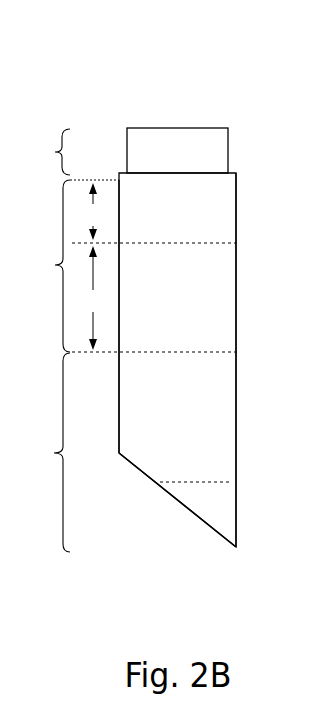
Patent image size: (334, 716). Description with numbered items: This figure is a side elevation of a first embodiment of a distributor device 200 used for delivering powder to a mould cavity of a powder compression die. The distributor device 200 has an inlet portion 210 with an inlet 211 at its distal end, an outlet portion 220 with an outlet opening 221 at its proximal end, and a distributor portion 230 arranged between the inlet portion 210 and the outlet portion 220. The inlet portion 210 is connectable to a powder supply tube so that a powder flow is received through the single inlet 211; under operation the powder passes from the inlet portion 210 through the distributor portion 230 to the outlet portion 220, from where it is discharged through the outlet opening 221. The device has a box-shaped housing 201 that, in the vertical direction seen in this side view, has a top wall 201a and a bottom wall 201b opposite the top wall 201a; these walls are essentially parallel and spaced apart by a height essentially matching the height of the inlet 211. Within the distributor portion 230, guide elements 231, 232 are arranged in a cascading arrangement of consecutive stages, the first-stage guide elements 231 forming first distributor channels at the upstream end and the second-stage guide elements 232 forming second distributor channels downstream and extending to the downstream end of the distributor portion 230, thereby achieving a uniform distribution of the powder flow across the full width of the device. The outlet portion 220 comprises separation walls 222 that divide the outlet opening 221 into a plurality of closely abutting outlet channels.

The distributor device 200 is at (76, 83).
The box-shaped housing 201 is at (236, 214).
The top wall 201a is at (236, 460).
The bottom wall 201b is at (119, 402).
The inlet portion 210 is at (44, 152).
The inlet 211 is at (178, 127).
The outlet portion 220 is at (44, 452).
The outlet opening 221 is at (180, 503).
The separation walls 222 is at (177, 417).
The distributor portion 230 is at (127, 266).
The guide elements of the first stage 231 is at (177, 208).
The guide elements of the second stage 232 is at (177, 297).